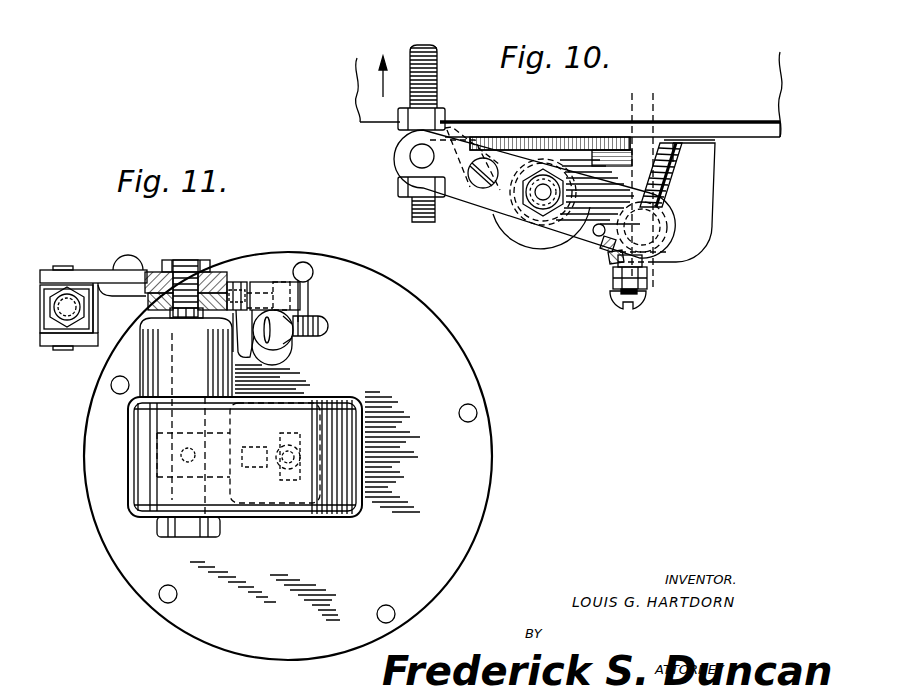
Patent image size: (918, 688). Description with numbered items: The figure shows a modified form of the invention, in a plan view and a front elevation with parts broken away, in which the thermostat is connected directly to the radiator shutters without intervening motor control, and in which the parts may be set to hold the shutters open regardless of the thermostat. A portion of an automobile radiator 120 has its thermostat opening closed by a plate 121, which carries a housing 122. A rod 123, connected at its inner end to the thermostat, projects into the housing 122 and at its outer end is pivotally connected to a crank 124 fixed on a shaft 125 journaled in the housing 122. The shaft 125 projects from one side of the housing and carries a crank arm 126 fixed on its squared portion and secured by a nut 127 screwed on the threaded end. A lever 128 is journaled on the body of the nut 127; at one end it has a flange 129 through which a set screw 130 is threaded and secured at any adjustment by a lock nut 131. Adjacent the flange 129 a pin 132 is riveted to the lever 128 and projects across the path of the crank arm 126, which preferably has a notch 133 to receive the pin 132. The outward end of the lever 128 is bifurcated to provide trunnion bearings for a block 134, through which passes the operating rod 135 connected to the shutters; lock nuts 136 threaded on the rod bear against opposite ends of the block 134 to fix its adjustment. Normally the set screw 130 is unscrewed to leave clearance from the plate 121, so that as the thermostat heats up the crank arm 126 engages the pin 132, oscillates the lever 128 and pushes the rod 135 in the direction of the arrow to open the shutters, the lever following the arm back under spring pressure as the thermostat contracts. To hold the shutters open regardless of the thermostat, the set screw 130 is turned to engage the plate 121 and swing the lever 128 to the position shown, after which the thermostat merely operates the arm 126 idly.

In FIG. 10, the automobile radiator 120 is at (378, 125).
In FIG. 10, the plate 121 is at (694, 128).
In FIG. 11, the plate 121 is at (483, 452).
In FIG. 10, the housing 122 is at (699, 196).
In FIG. 11, the housing 122 is at (334, 417).
In FIG. 10, the rod 123 is at (655, 110).
In FIG. 11, the rod 123 is at (238, 446).
In FIG. 10, the crank 124 is at (667, 228).
In FIG. 11, the crank 124 is at (247, 535).
In FIG. 10, the shaft 125 is at (512, 238).
In FIG. 11, the shaft 125 is at (129, 422).
In FIG. 10, the crank arm 126 is at (618, 187).
In FIG. 11, the crank arm 126 is at (220, 270).
In FIG. 10, the nut 127 is at (543, 193).
In FIG. 11, the nut 127 is at (179, 262).
In FIG. 10, the lever 128 is at (568, 256).
In FIG. 11, the lever 128 is at (248, 283).
In FIG. 10, the flange 129 is at (662, 262).
In FIG. 11, the flange 129 is at (301, 305).
In FIG. 10, the set screw 130 is at (674, 160).
In FIG. 11, the set screw 130 is at (328, 325).
In FIG. 10, the lock nut 131 is at (613, 285).
In FIG. 11, the lock nut 131 is at (294, 343).
In FIG. 10, the pin 132 is at (598, 238).
In FIG. 11, the pin 132 is at (241, 356).
In FIG. 10, the notch 133 is at (585, 243).
In FIG. 11, the notch 133 is at (231, 282).
In FIG. 11, the block 134 is at (42, 292).
In FIG. 10, the operating rod 135 is at (432, 48).
In FIG. 11, the operating rod 135 is at (73, 298).
In FIG. 10, the lock nuts 136 is at (445, 111).
In FIG. 11, the lock nuts 136 is at (41, 341).